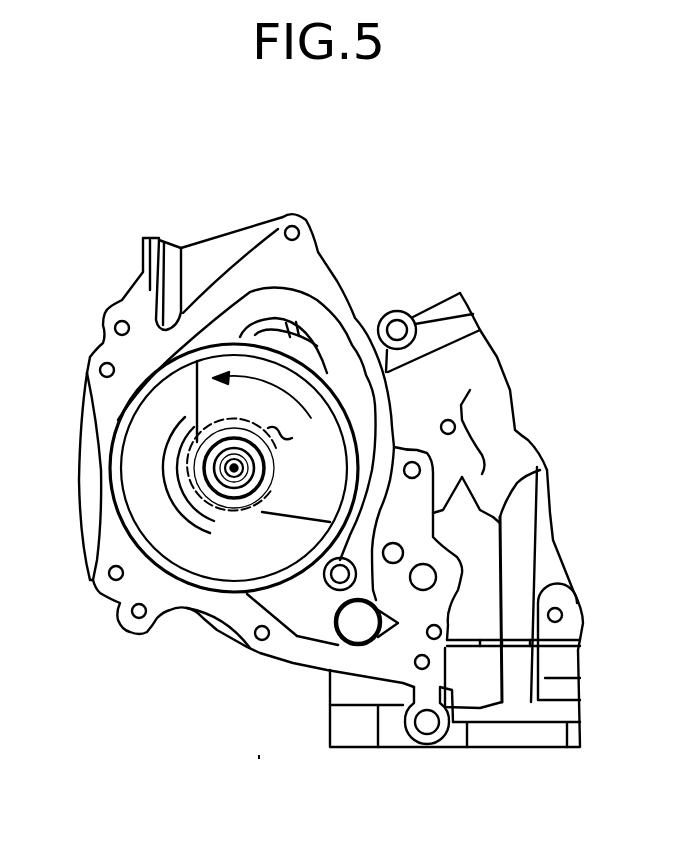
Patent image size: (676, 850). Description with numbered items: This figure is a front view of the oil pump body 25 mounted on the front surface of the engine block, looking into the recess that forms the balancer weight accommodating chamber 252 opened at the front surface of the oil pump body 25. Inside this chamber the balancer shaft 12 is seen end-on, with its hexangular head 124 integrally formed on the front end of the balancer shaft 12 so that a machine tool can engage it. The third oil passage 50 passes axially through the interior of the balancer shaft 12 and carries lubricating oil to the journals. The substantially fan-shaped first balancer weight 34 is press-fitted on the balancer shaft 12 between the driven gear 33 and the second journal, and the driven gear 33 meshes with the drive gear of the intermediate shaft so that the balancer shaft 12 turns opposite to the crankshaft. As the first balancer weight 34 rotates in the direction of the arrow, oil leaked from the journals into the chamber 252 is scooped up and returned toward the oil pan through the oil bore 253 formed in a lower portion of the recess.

The balancer shaft 12 is at (229, 498).
The head 124 is at (233, 493).
The oil pump body 25 is at (202, 632).
The balancer weight accommodating chamber 252 is at (136, 516).
The oil bore 253 is at (356, 640).
The driven gear 33 is at (275, 433).
The first balancer weight 34 is at (197, 398).
The third oil passage 50 is at (208, 463).